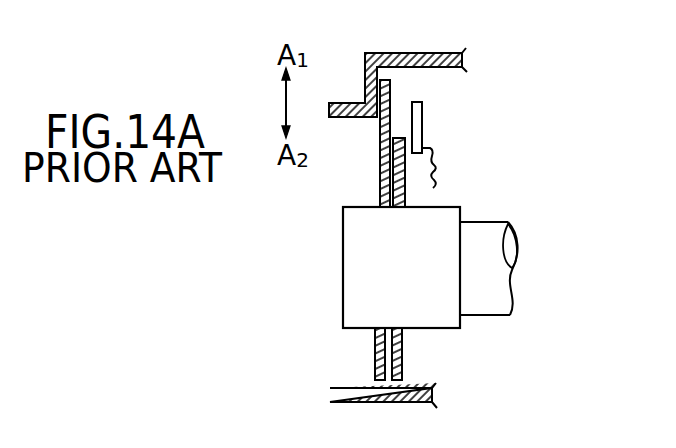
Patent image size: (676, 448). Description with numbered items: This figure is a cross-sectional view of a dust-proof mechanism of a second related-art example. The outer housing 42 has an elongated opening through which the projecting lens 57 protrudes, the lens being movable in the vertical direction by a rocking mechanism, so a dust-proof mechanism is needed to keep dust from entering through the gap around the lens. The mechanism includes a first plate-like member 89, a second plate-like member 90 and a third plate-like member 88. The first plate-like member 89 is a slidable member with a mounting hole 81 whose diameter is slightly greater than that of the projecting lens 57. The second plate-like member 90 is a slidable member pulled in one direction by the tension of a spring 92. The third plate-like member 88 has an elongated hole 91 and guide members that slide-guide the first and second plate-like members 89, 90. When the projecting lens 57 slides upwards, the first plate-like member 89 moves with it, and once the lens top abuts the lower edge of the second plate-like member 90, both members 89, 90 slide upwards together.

The outer housing 42 is at (433, 50).
The projecting lens 57 is at (362, 257).
The mounting hole 81 is at (398, 327).
The third plate-like member 88 is at (369, 349).
The first plate-like member 89 is at (403, 352).
The second plate-like member 90 is at (426, 115).
The elongated hole 91 is at (382, 140).
The spring 92 is at (437, 168).